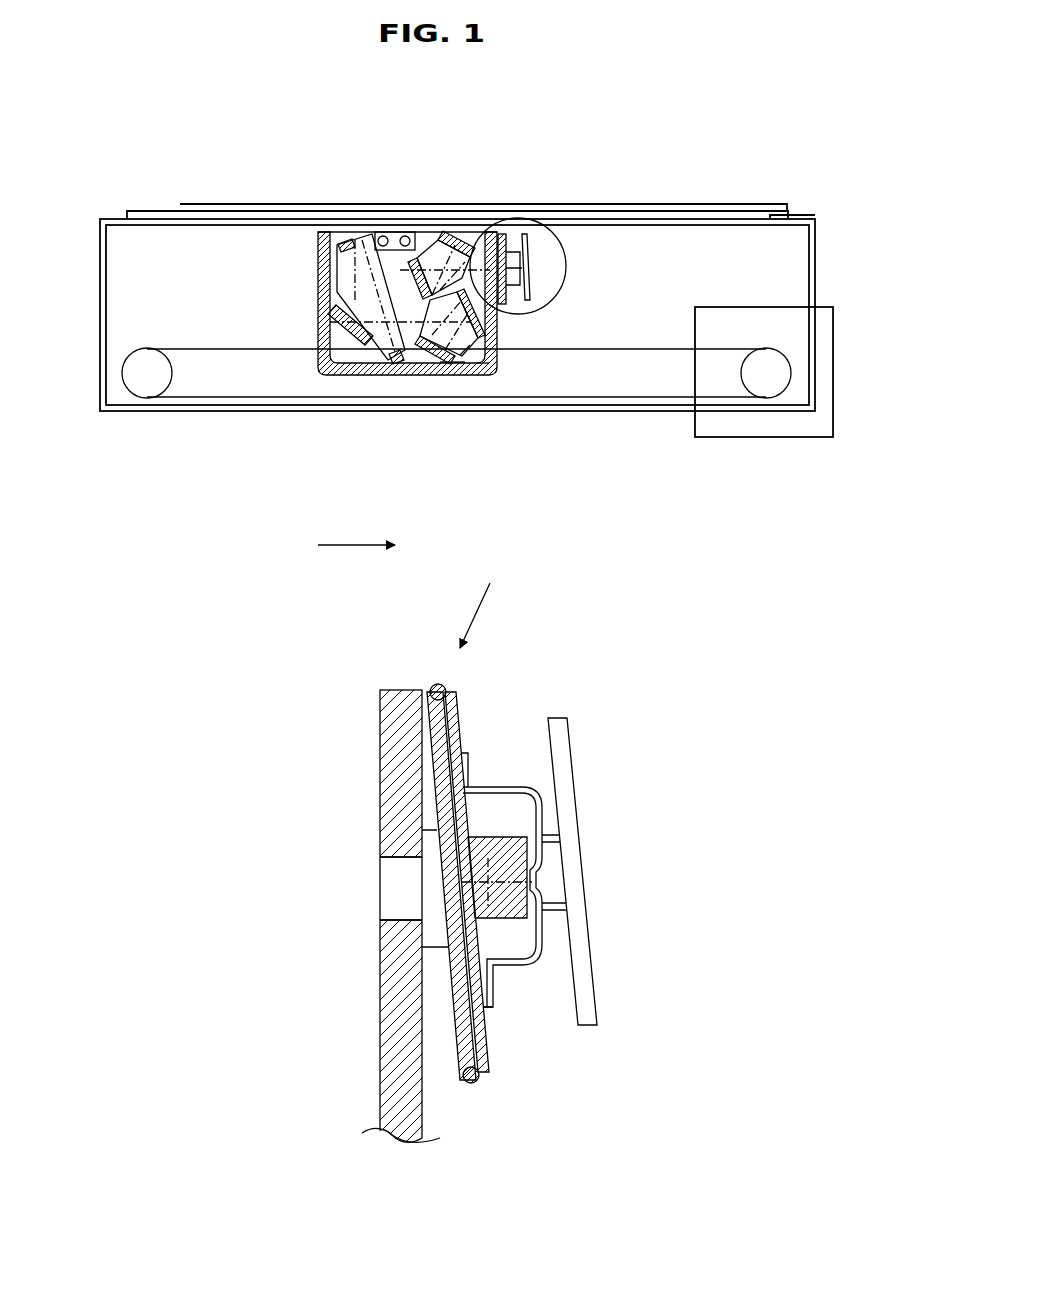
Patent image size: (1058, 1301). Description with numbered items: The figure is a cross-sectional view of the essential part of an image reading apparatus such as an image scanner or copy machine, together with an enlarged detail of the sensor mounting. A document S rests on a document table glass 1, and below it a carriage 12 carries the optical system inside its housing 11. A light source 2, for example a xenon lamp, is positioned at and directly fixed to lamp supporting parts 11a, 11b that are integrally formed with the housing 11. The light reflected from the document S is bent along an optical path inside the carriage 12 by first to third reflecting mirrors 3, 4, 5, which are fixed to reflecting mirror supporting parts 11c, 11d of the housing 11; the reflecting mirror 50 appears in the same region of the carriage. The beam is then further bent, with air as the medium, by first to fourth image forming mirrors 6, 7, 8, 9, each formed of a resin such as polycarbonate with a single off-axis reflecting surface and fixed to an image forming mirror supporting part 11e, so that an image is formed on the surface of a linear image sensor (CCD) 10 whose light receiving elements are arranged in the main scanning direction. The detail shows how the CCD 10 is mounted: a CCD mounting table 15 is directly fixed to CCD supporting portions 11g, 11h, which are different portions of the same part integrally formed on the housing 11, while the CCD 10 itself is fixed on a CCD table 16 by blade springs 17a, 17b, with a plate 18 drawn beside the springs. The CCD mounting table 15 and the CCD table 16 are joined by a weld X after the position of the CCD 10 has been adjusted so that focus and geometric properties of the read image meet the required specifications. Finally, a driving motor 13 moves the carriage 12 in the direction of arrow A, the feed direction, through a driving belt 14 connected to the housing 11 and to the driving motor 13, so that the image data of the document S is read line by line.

The document table glass 1 is at (200, 215).
The document S is at (282, 208).
The light source 2 is at (405, 232).
The first reflecting mirror 3 is at (418, 362).
The second reflecting mirror 4 is at (350, 237).
The third reflecting mirror 5 is at (340, 332).
The first image forming mirror 6 is at (496, 349).
The second image forming mirror 7 is at (445, 377).
The third image forming mirror 8 is at (470, 262).
The fourth image forming mirror 9 is at (445, 245).
The linear image sensor (CCD) 10 is at (505, 268).
The housing 11 is at (395, 805).
The lamp supporting part 11a is at (438, 147).
The lamp supporting part 11b is at (400, 232).
The reflecting mirror supporting part 11c is at (218, 381).
The reflecting mirror supporting part 11d is at (355, 376).
The image forming mirror supporting part 11e is at (588, 378).
The CCD supporting portion 11g is at (285, 888).
The CCD supporting portion 11h is at (395, 897).
The carriage 12 is at (318, 262).
The driving motor 13 is at (732, 325).
The driving belt 14 is at (608, 399).
The CCD mounting table 15 is at (457, 1033).
The CCD table 16 is at (488, 1037).
The blade spring 17a is at (589, 835).
The blade spring 17b is at (497, 785).
The plate 18 is at (598, 990).
The reflecting mirror 50 is at (440, 372).
The arrow A (feed direction) A is at (355, 546).
The weld X is at (495, 1113).